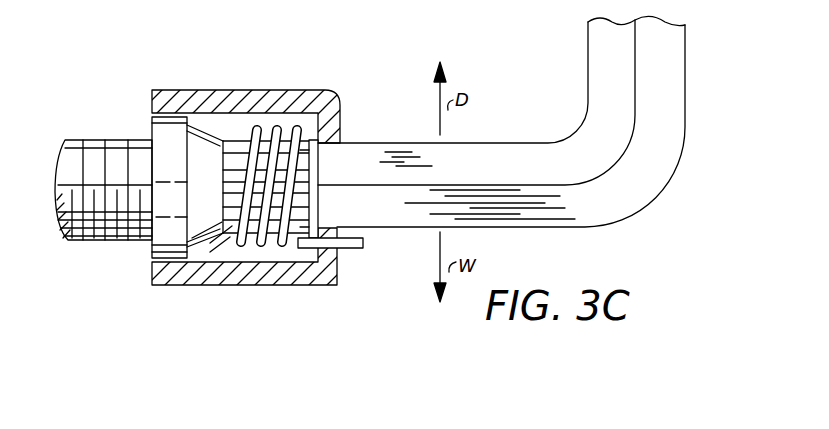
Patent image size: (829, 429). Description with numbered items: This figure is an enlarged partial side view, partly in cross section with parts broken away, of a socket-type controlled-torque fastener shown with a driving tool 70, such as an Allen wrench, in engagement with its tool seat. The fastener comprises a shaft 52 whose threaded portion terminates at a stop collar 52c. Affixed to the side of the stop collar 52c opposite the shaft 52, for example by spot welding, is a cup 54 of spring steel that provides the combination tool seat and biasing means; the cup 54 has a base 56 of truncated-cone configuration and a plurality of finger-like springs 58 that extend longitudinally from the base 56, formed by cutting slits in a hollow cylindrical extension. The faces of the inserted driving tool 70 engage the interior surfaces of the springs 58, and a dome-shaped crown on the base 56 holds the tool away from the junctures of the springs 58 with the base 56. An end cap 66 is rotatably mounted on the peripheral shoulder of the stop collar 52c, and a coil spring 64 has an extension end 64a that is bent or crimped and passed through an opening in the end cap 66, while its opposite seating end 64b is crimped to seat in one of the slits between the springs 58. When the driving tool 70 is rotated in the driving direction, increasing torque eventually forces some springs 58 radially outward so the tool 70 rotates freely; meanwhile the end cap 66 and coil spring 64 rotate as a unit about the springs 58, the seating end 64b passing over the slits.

The shaft 52 is at (77, 158).
The stop collar 52c is at (163, 148).
The cup 54 is at (221, 136).
The base 56 is at (200, 250).
The finger-like springs 58 is at (248, 124).
The coil spring 64 is at (296, 210).
The extension end 64a is at (418, 276).
The seating end 64b is at (211, 246).
The end cap 66 is at (298, 273).
The driving tool 70 is at (576, 228).